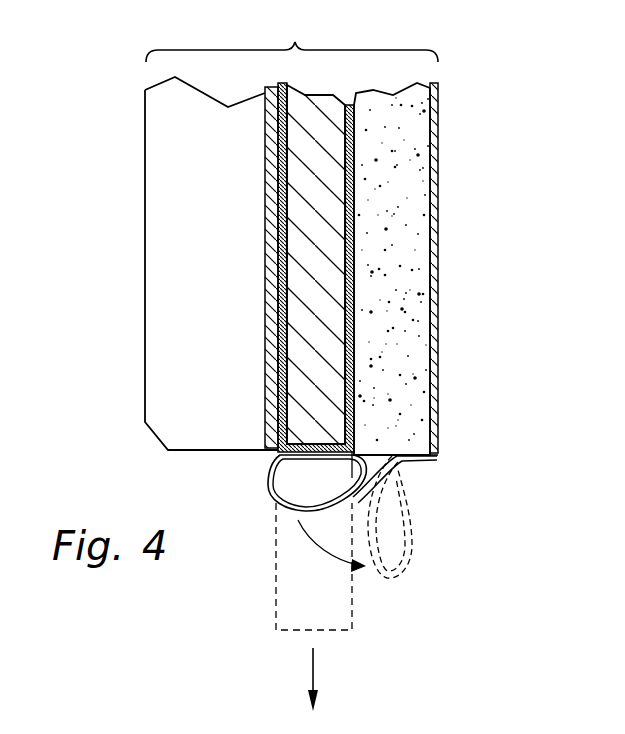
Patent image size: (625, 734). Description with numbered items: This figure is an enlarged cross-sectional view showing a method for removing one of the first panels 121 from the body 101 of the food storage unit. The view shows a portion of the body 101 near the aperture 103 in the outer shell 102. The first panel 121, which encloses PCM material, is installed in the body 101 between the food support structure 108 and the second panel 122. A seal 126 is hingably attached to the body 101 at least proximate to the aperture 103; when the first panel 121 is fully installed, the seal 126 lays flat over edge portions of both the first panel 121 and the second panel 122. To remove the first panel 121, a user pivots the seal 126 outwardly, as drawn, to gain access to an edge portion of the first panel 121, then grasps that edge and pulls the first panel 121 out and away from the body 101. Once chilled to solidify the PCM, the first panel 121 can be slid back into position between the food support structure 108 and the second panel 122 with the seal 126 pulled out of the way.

The body 101 is at (295, 42).
The outer shell 102 is at (438, 165).
The aperture 103 is at (433, 423).
The food support structure 108 is at (143, 212).
The first panel 121 is at (302, 393).
The second panel 122 is at (402, 252).
The seal 126 is at (270, 488).